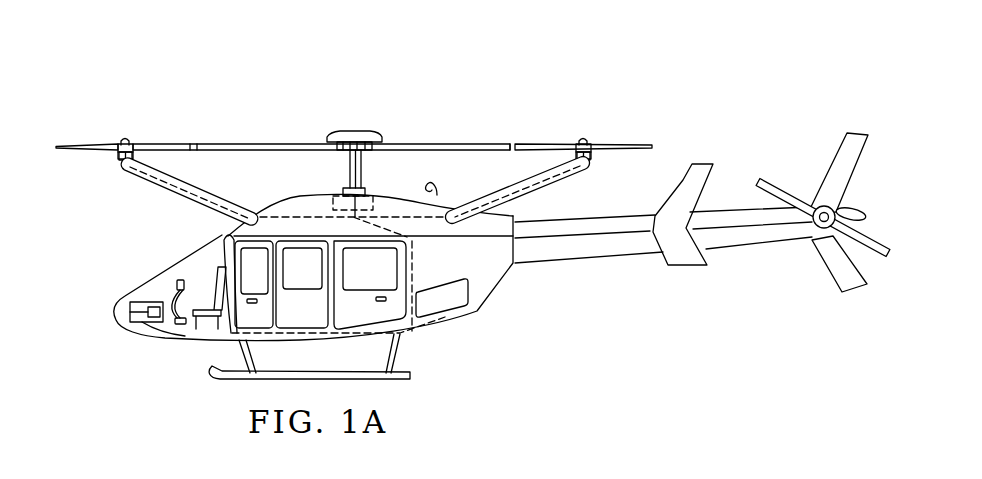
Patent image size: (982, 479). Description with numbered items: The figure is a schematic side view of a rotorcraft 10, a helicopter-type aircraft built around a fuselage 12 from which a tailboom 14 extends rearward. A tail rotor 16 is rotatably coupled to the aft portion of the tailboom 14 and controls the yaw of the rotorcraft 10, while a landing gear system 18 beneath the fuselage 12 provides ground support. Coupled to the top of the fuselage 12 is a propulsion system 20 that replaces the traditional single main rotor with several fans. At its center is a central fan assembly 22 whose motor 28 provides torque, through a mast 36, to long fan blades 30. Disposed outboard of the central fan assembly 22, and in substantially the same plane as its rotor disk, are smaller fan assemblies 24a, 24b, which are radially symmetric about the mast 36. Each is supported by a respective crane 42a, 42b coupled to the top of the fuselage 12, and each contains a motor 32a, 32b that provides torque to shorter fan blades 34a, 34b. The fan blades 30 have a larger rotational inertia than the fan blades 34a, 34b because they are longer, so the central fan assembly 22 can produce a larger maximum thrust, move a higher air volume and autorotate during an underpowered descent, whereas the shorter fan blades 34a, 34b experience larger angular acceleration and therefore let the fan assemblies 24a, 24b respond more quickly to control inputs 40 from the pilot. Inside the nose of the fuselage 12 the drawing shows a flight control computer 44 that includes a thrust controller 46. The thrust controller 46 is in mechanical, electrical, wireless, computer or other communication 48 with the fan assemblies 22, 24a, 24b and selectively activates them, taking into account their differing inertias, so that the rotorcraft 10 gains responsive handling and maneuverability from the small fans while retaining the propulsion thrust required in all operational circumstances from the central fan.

The rotorcraft 10 is at (214, 62).
The fuselage 12 is at (475, 312).
The tailboom 14 is at (605, 248).
The tail rotor 16 is at (778, 188).
The landing gear system 18 is at (411, 374).
The propulsion system 20 is at (402, 118).
The central fan assembly 22 is at (328, 113).
The fan assembly 24a is at (138, 120).
The fan assembly 24b is at (569, 116).
The motor 28 is at (333, 206).
The fan blades 30 is at (253, 143).
The motor 32a is at (118, 163).
The motor 32b is at (594, 160).
The fan blades 34a is at (95, 143).
The fan blades 34b is at (617, 143).
The mast 36 is at (362, 167).
The control inputs 40 is at (168, 296).
The crane 42a is at (175, 198).
The crane 42b is at (527, 198).
The flight control computer 44 is at (150, 325).
The thrust controller 46 is at (135, 306).
The communication 48 is at (413, 274).